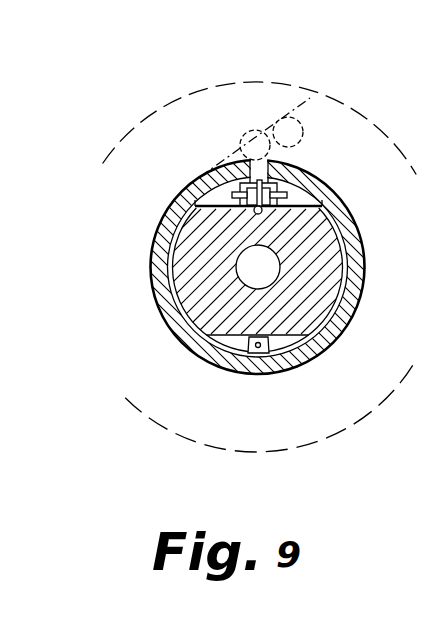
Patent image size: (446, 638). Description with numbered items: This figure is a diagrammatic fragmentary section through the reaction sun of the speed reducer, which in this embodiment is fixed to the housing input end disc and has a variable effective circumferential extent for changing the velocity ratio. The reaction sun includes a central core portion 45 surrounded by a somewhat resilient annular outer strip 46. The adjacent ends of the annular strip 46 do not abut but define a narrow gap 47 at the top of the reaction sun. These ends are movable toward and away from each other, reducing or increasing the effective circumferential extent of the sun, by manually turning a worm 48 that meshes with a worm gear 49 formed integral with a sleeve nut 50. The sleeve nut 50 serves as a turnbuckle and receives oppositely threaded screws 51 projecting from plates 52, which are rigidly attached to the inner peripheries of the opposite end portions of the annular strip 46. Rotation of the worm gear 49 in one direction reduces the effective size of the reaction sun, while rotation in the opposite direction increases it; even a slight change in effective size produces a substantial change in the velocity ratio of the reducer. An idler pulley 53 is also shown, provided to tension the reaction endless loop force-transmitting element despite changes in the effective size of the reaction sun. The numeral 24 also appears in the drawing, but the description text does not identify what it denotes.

The needle 24 is at (253, 130).
The idler pulley 53 is at (297, 118).
The central core portion 45 is at (318, 240).
The annular outer strip 46 is at (353, 292).
The gap 47 is at (283, 163).
The worm 48 is at (257, 214).
The worm gear 49 is at (249, 215).
The sleeve nut 50 is at (274, 173).
The oppositely threaded screws 51 is at (220, 165).
The plates 52 is at (203, 198).